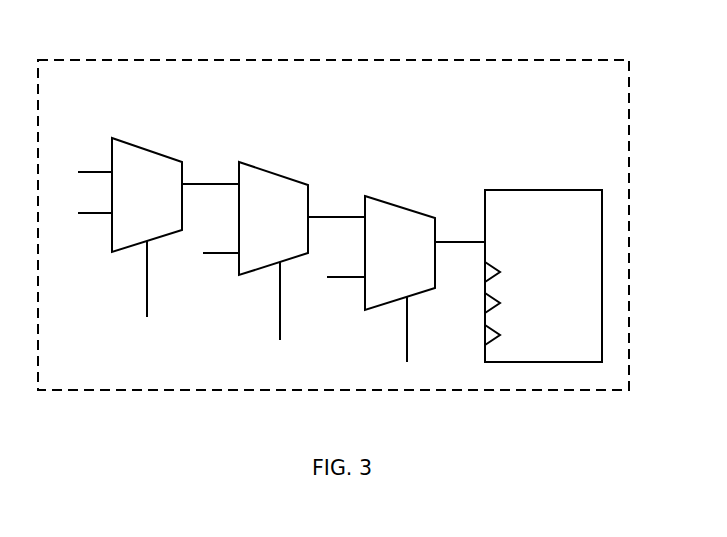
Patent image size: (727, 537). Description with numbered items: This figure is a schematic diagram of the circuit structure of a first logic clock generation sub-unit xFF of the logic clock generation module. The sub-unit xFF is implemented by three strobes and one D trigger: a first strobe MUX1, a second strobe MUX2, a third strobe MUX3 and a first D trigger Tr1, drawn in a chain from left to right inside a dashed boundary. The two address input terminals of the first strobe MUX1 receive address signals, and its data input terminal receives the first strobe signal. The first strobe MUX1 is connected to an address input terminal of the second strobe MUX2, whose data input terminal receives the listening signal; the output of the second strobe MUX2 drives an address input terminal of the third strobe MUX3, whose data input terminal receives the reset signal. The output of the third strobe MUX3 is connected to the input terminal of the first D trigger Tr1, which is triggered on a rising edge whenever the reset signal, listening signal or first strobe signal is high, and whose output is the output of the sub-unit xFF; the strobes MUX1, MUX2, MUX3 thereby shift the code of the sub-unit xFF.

The first logic clock generation sub-unit xFF is at (328, 60).
The first strobe MUX1 is at (135, 145).
The second strobe MUX2 is at (268, 165).
The third strobe MUX3 is at (397, 200).
The first D trigger Tr1 is at (529, 190).